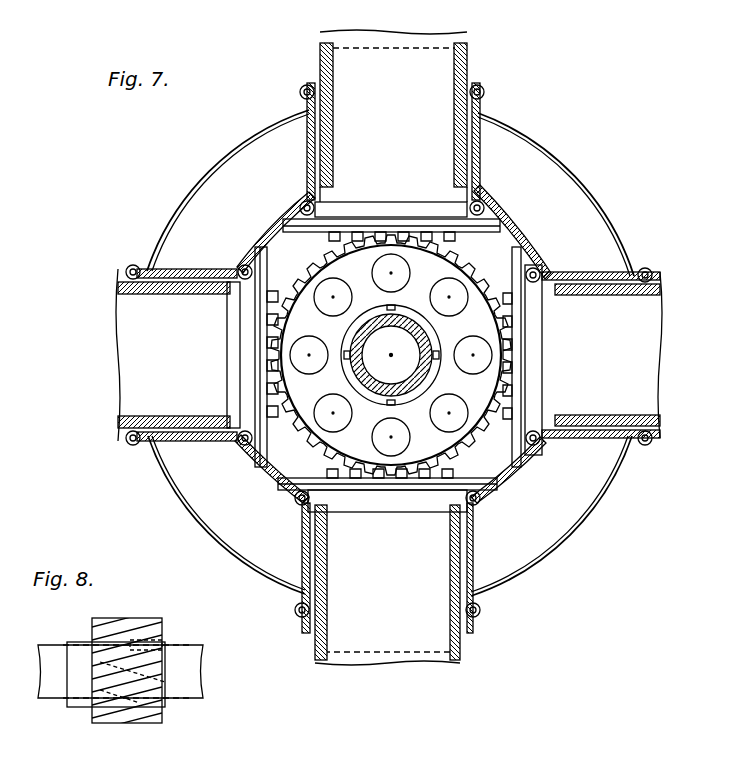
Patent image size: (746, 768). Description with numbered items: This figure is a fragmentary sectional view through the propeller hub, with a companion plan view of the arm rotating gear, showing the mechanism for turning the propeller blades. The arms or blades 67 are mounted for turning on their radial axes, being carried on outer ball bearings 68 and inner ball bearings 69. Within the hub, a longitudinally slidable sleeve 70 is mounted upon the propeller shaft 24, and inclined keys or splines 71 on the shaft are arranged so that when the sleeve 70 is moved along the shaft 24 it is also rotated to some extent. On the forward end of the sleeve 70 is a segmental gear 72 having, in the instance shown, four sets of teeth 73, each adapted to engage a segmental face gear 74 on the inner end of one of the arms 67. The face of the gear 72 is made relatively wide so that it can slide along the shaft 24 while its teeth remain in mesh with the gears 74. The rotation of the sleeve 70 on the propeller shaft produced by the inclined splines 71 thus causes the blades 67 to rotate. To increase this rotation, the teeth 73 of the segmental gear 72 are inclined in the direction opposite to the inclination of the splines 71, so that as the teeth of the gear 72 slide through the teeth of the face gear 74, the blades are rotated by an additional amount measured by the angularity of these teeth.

In FIG. 7, the propeller shaft 24 is at (425, 348).
In FIG. 8, the propeller shaft 24 is at (187, 692).
In FIG. 7, the arms or blades 67 is at (128, 437).
In FIG. 7, the outer ball bearings 68 is at (140, 420).
In FIG. 7, the inner ball bearings 69 is at (318, 198).
In FIG. 7, the longitudinally slidable sleeve 70 is at (374, 400).
In FIG. 7, the inclined keys or splines 71 is at (372, 310).
In FIG. 8, the inclined keys or splines 71 is at (166, 678).
In FIG. 7, the segmental gear 72 is at (468, 271).
In FIG. 8, the segmental gear 72 is at (147, 712).
In FIG. 7, the sets of teeth 73 is at (285, 287).
In FIG. 8, the sets of teeth 73 is at (136, 648).
In FIG. 7, the segmental face gear 74 is at (250, 380).